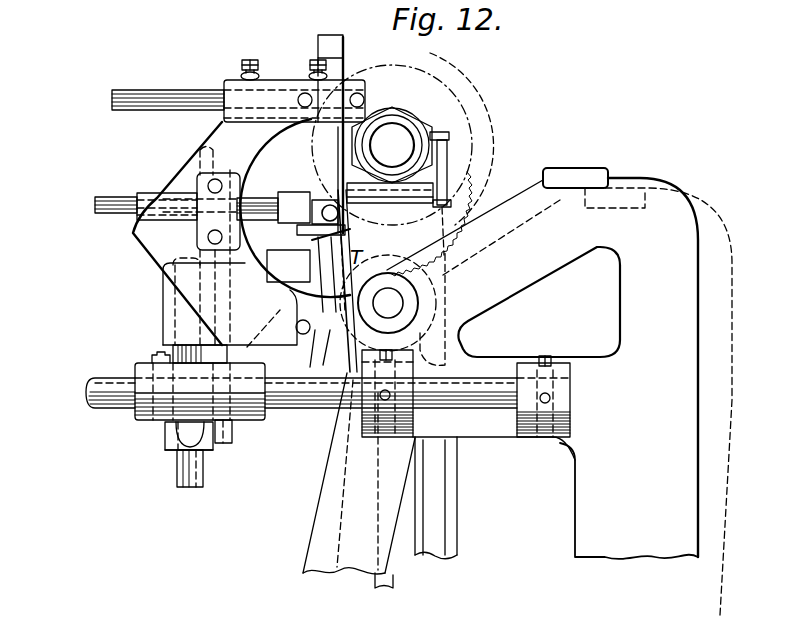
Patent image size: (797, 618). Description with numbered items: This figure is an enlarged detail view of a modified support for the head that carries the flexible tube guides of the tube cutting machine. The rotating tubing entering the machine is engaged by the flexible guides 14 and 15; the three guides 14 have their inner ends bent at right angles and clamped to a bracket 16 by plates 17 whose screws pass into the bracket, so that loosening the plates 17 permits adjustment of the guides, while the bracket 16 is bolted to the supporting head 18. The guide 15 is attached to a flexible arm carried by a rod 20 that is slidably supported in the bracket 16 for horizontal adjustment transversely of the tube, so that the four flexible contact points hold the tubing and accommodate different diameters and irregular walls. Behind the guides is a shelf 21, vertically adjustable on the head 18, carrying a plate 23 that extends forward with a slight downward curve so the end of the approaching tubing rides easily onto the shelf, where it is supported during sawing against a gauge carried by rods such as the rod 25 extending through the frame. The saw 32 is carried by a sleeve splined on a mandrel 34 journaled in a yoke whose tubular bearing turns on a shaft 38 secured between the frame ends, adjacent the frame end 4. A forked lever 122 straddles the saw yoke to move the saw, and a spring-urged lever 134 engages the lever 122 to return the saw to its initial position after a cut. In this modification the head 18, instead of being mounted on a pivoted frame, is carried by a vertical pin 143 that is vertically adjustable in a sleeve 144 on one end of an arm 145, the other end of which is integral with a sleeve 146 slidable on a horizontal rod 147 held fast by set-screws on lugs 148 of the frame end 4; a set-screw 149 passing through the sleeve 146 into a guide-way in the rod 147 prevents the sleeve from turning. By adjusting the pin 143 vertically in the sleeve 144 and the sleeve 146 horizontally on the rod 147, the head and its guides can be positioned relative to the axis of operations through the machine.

The frame end 4 is at (559, 396).
The flexible guides 14 is at (318, 44).
The flexible guide 15 is at (353, 213).
The bracket 16 is at (148, 240).
The plates 17 is at (320, 402).
The supporting head 18 is at (170, 308).
The rod 20 is at (112, 97).
The shelf 21 is at (275, 238).
The plate 23 is at (332, 234).
The rod 25 is at (110, 211).
The saw 32 is at (467, 178).
The mandrel 34 is at (395, 143).
The shaft 38 is at (392, 302).
The lever 122 is at (393, 577).
The lever 134 is at (452, 524).
The vertical pin 143 is at (181, 478).
The sleeve 144 is at (168, 450).
The arm 145 is at (185, 430).
The sleeve 146 is at (135, 421).
The horizontal rod 147 is at (96, 387).
The lugs 148 is at (357, 393).
The set-screw 149 is at (155, 355).